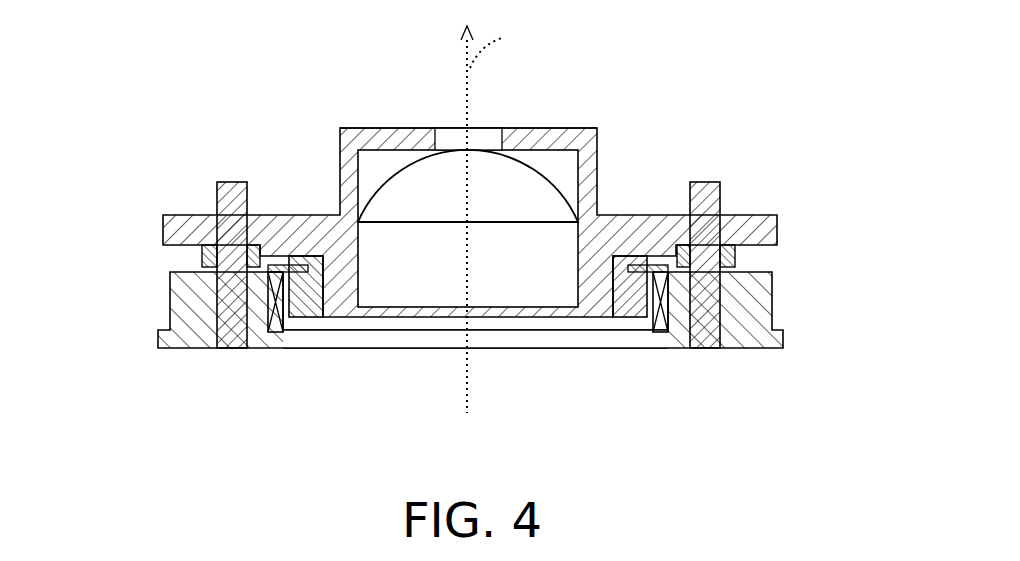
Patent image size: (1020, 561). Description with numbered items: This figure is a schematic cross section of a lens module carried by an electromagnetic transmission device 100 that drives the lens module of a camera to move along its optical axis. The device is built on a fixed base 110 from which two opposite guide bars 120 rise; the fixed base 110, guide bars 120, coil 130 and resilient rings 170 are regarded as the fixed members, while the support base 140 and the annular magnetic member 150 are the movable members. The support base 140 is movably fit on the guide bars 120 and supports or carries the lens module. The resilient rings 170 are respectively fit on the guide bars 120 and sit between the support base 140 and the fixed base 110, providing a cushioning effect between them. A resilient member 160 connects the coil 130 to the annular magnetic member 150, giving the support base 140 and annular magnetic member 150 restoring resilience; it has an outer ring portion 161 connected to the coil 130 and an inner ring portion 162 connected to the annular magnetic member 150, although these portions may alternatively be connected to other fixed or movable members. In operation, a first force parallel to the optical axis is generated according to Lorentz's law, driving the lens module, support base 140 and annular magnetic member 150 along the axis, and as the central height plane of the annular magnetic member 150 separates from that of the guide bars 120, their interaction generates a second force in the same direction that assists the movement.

The electromagnetic transmission device 100 is at (282, 200).
The fixed base 110 is at (750, 307).
The guide bars 120 is at (229, 332).
The coil 130 is at (648, 322).
The support base 140 is at (422, 181).
The annular magnetic member 150 is at (298, 318).
The resilient member 160 is at (458, 213).
The outer ring portion 161 is at (668, 272).
The inner ring portion 162 is at (628, 265).
The resilient rings 170 is at (203, 254).